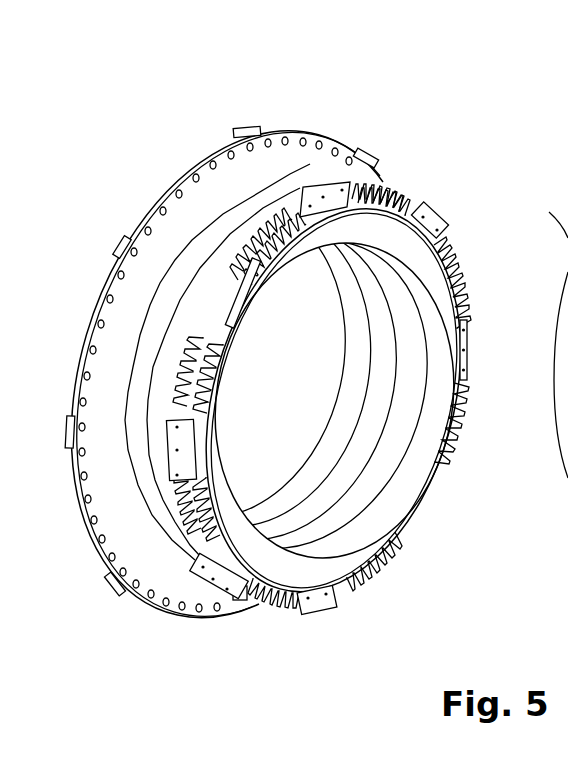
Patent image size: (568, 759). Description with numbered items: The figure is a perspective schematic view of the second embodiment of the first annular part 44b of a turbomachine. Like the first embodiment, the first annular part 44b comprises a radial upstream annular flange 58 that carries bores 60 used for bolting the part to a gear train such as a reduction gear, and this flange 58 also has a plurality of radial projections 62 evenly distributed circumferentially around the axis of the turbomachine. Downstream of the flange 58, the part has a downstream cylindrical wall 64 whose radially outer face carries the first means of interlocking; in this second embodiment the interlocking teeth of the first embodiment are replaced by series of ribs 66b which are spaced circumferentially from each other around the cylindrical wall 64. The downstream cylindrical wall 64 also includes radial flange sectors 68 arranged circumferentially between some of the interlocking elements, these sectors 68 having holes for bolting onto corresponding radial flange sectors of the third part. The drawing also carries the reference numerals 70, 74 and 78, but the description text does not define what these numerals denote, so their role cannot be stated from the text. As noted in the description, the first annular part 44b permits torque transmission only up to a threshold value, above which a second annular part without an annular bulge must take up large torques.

The first annular part 44b is at (438, 151).
The radial upstream annular flange 58 is at (165, 227).
The bores 60 is at (334, 150).
The radial projections 62 is at (242, 600).
The downstream cylindrical wall 64 is at (428, 507).
The series of ribs 66b is at (395, 186).
The radial flange sectors 68 is at (338, 182).
The flange web 70 is at (233, 214).
The housing portion 74 is at (543, 214).
The housing portion 78 is at (567, 290).